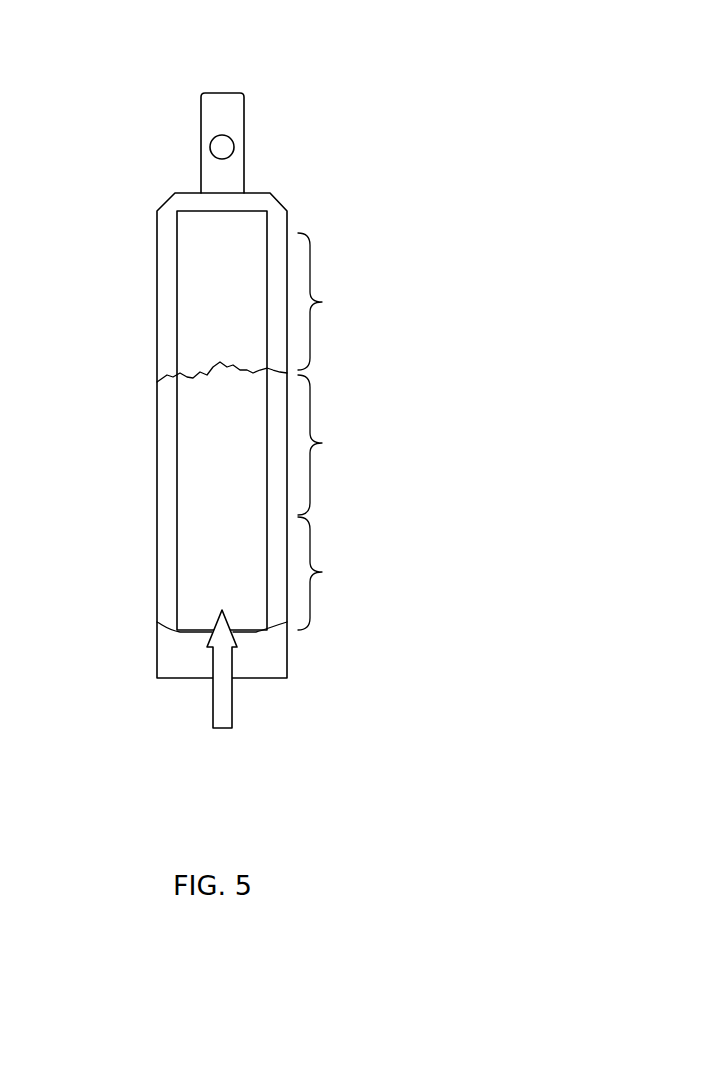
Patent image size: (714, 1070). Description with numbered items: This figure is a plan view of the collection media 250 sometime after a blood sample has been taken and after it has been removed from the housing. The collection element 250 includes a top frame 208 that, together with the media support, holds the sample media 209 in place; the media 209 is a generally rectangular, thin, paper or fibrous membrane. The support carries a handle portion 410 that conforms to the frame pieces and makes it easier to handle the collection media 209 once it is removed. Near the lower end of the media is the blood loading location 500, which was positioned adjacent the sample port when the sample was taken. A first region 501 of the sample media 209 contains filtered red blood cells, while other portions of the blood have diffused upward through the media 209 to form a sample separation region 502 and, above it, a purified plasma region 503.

The collection element 250 is at (213, 339).
The handle portion 410 is at (237, 112).
The sample media 209 is at (232, 235).
The top frame 208 is at (165, 275).
The purified plasma region 503 is at (424, 301).
The sample separation region 502 is at (440, 445).
The first region 501 is at (411, 573).
The blood loading location 500 is at (221, 692).